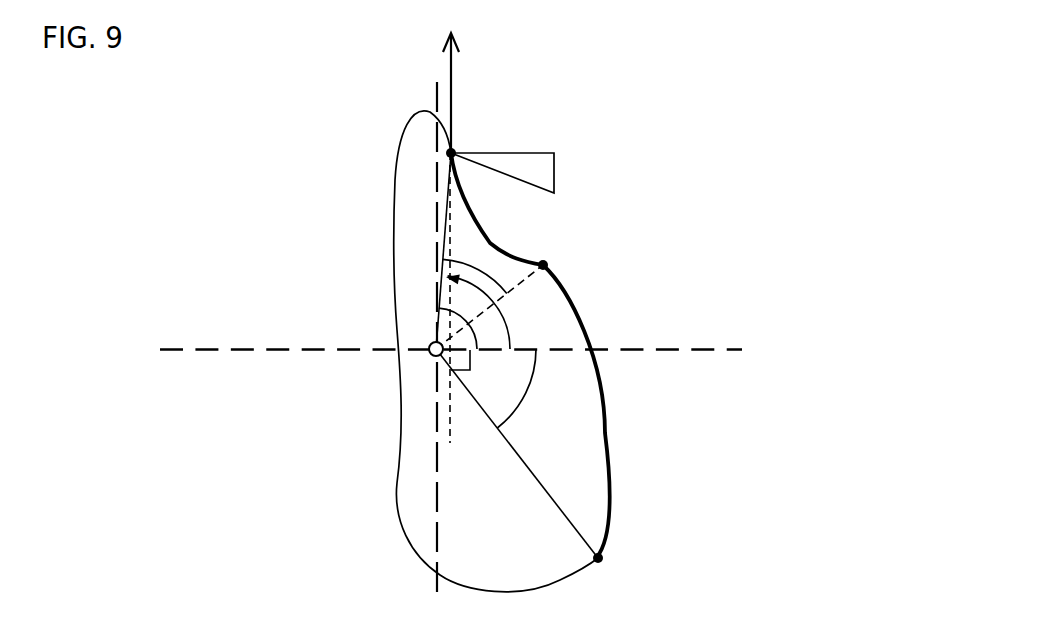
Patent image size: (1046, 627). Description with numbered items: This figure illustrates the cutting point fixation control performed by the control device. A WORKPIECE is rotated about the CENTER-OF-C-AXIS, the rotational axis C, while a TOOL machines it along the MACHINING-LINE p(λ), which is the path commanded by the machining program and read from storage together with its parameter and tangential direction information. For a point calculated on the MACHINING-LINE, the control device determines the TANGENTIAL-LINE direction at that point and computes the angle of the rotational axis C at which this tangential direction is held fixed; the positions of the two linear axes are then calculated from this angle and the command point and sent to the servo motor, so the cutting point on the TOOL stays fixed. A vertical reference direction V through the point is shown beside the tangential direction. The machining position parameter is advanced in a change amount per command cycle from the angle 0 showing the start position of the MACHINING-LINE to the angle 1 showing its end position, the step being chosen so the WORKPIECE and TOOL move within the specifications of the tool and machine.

The vertical reference line through point Pλn (V direction) V is at (465, 315).
The angle θ1 showing the end position of the machining line 1 is at (469, 329).
The angle θ0 showing the start position of the machining line 0 is at (526, 388).
The tool TOOL is at (556, 177).
The workpiece WORKPIECE is at (400, 522).
The machining line p(λ) MACHINING-LINE is at (597, 388).
The rotational axis C CENTER-OF-C-AXIS is at (430, 354).
The tangential line direction TANGENTIAL-LINE is at (453, 82).